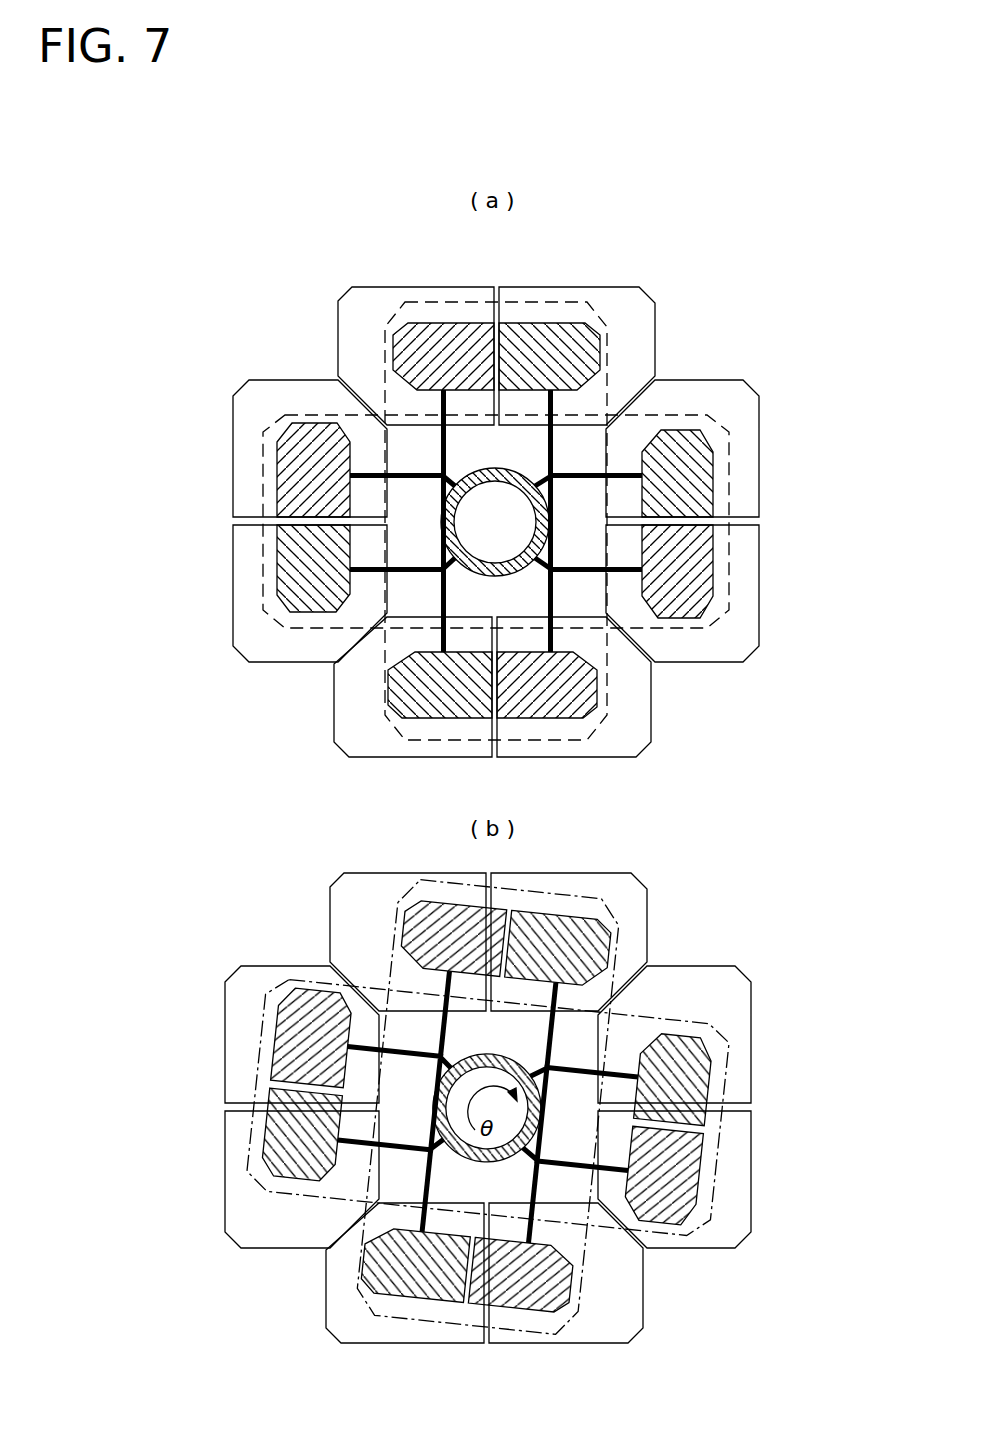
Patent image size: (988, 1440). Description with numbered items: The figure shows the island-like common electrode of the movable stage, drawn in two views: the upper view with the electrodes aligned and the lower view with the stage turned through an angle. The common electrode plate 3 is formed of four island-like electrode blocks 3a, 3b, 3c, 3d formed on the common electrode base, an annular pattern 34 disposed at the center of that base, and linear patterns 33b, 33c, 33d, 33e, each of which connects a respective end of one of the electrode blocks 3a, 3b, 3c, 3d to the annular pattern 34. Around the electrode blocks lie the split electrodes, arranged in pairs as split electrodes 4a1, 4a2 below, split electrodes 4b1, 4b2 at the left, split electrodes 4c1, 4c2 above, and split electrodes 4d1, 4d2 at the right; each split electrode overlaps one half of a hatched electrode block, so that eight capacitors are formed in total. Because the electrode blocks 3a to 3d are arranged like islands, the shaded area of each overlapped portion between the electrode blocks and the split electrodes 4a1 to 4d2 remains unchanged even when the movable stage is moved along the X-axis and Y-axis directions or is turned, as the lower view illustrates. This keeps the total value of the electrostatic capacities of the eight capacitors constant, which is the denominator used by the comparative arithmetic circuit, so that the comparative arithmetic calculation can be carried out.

The common electrode plate 3 is at (635, 432).
The electrode block 3a is at (587, 716).
The electrode block 3b is at (278, 492).
The electrode block 3c is at (580, 328).
The electrode block 3d is at (710, 487).
The split electrode 4a1 is at (645, 707).
The split electrode 4a2 is at (352, 702).
The split electrode 4b1 is at (240, 622).
The split electrode 4b2 is at (252, 420).
The split electrode 4c1 is at (377, 295).
The split electrode 4c2 is at (570, 295).
The split electrode 4d1 is at (740, 410).
The split electrode 4d2 is at (749, 617).
The linear pattern 33b is at (415, 480).
The linear pattern 33c is at (547, 440).
The linear pattern 33d is at (575, 563).
The connecting leg 33e is at (450, 607).
The annular pattern 34 is at (503, 483).